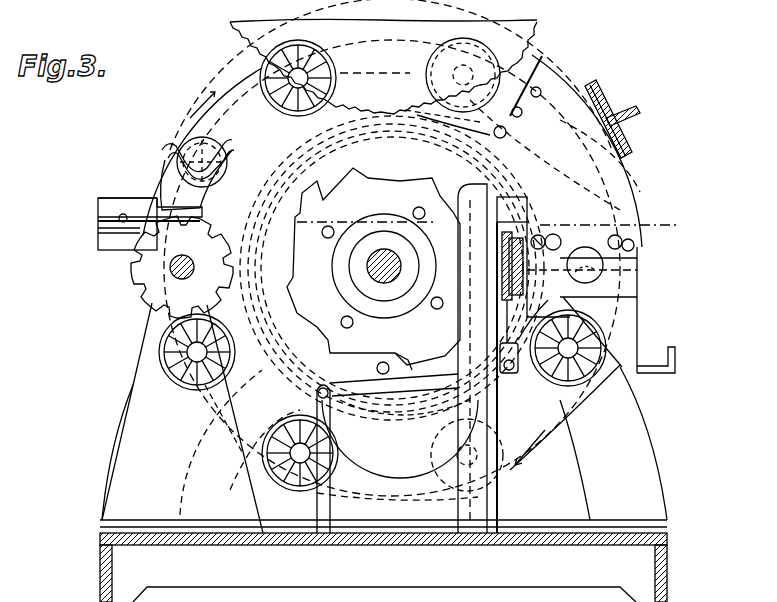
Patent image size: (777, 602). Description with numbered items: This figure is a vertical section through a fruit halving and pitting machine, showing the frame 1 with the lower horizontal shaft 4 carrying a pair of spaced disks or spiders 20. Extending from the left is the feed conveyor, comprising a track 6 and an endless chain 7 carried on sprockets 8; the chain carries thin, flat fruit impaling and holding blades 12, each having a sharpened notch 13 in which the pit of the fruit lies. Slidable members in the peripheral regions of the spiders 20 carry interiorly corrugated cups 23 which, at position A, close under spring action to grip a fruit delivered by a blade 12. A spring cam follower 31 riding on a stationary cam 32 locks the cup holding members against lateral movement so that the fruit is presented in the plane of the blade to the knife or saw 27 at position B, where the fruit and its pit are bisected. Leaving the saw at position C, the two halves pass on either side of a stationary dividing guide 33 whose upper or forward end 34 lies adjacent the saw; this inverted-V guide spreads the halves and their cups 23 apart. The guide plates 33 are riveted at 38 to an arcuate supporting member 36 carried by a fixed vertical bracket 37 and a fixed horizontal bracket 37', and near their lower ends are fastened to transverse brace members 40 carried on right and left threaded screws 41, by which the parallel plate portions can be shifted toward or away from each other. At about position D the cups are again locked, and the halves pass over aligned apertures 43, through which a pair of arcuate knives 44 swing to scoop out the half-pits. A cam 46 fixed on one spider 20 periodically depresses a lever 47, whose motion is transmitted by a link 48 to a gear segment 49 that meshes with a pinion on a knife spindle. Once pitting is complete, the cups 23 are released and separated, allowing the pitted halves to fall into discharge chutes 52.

The frame 1 is at (383, 301).
The second horizontal shaft 4 is at (376, 263).
The track 6 is at (112, 200).
The endless chain 7 is at (119, 217).
The sprockets 8 is at (142, 262).
The fruit impaling and holding blades 12 is at (233, 152).
The notch 13 is at (202, 172).
The disks or spiders 20 is at (572, 400).
The cups 23 is at (264, 78).
The knife or saw 27 is at (240, 28).
The spring cam follower 31 is at (303, 161).
The stationary cam 32 is at (240, 223).
The dividing guide 33 is at (570, 106).
The upper or forward end 34 is at (514, 66).
The supporting member 36 is at (642, 190).
The vertical bracket 37 is at (402, 358).
The horizontal bracket 37' is at (639, 109).
The rivets 38 is at (540, 90).
The transverse brace member 40 is at (618, 212).
The right and left threaded screws 41 is at (635, 244).
The apertures 43 is at (590, 268).
The arcuate knives 44 is at (582, 286).
The cam 46 is at (400, 182).
The lever 47 is at (400, 362).
The link 48 is at (518, 378).
The gear segment 49 is at (506, 248).
The discharge chutes 52 is at (662, 360).
The position A is at (144, 129).
The position B is at (255, 43).
The position C is at (505, 35).
The position D is at (642, 160).